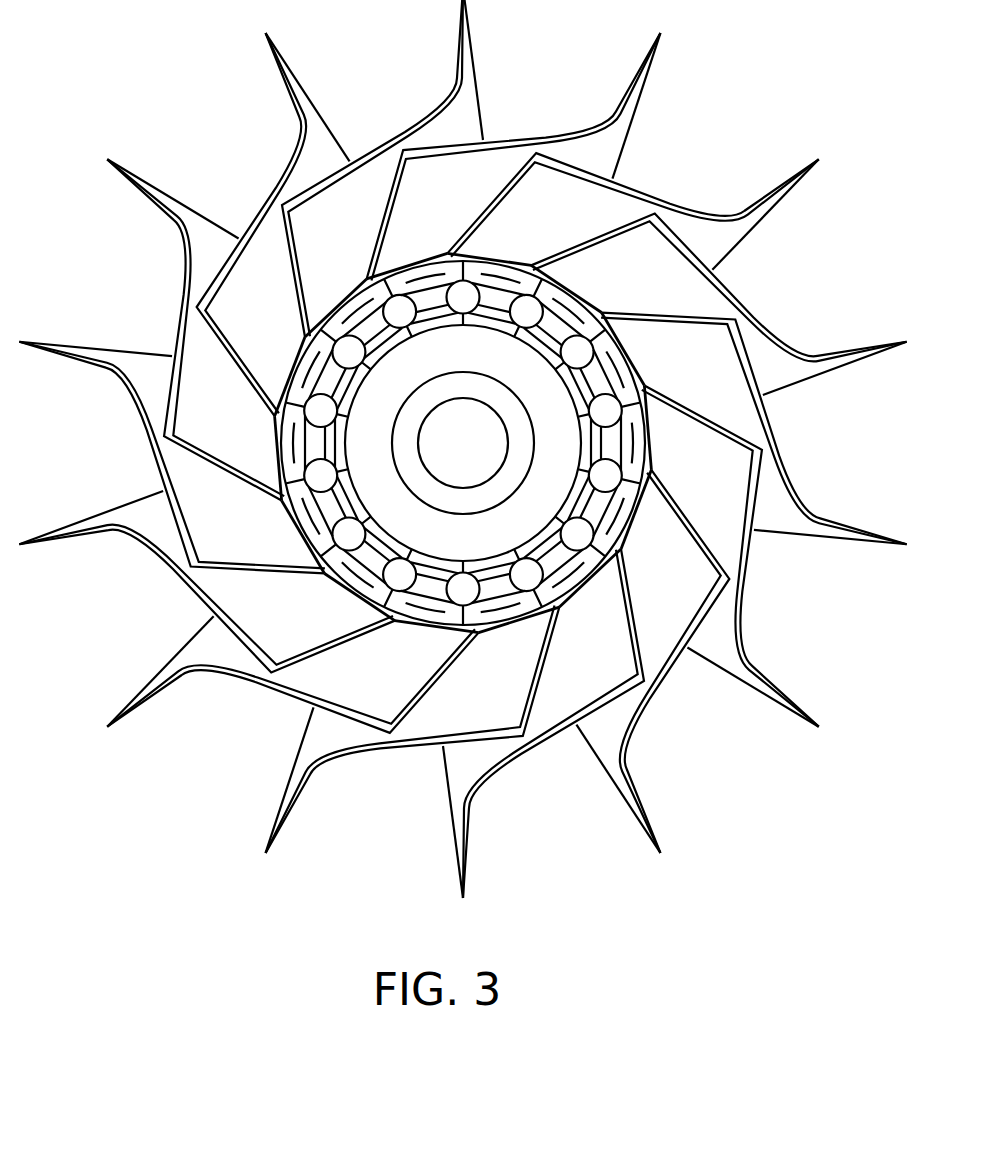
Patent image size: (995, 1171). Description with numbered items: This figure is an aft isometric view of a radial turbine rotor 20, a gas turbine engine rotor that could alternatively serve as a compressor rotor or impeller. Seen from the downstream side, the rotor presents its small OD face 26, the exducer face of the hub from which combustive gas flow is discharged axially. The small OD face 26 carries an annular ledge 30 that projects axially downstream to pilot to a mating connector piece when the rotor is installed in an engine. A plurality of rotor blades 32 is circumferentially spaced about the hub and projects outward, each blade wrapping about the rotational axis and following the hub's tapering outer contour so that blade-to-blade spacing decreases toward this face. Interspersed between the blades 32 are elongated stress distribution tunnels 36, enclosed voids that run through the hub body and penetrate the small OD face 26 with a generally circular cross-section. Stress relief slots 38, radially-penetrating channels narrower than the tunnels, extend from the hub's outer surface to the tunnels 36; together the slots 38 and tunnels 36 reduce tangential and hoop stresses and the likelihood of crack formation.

The radial turbine rotor 20 is at (473, 465).
The small OD face 26 is at (463, 412).
The annular ledge 30 is at (463, 443).
The rotor blades 32 is at (473, 465).
The stress distribution tunnels 36 is at (463, 443).
The stress relief slots 38 is at (459, 443).